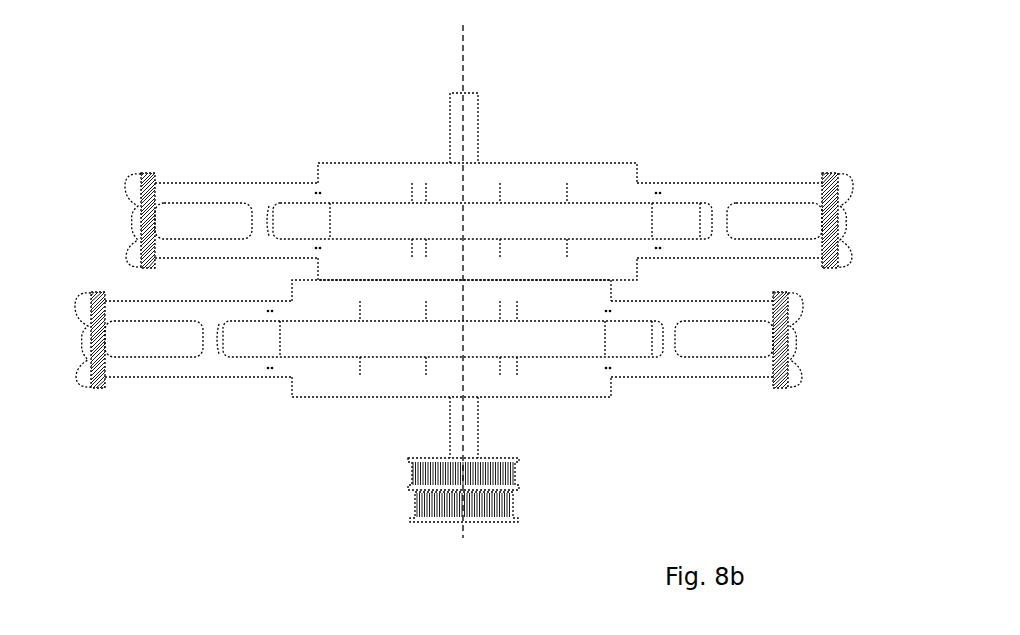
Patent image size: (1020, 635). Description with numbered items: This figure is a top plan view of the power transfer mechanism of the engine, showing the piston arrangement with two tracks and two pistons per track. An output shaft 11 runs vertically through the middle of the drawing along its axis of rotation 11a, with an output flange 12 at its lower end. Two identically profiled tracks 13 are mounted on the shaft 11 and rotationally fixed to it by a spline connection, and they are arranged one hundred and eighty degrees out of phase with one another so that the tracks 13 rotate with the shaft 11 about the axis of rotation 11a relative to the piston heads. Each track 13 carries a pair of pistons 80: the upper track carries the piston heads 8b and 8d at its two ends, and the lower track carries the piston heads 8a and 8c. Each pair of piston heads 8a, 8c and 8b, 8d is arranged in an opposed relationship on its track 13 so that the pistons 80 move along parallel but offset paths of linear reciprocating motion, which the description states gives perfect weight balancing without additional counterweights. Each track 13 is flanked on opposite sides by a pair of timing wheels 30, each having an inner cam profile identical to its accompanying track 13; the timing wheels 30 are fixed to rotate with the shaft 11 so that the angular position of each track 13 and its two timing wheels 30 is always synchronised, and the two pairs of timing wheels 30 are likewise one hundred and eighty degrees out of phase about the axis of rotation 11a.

The axis of rotation 11a is at (463, 67).
The output shaft 11 is at (463, 122).
The output flange 12 is at (508, 519).
The track 13 is at (530, 217).
The timing wheel 30 is at (337, 175).
The piston 80 is at (235, 192).
The piston head 8a is at (85, 367).
The piston head 8b is at (135, 222).
The piston head 8c is at (790, 342).
The piston head 8d is at (840, 217).